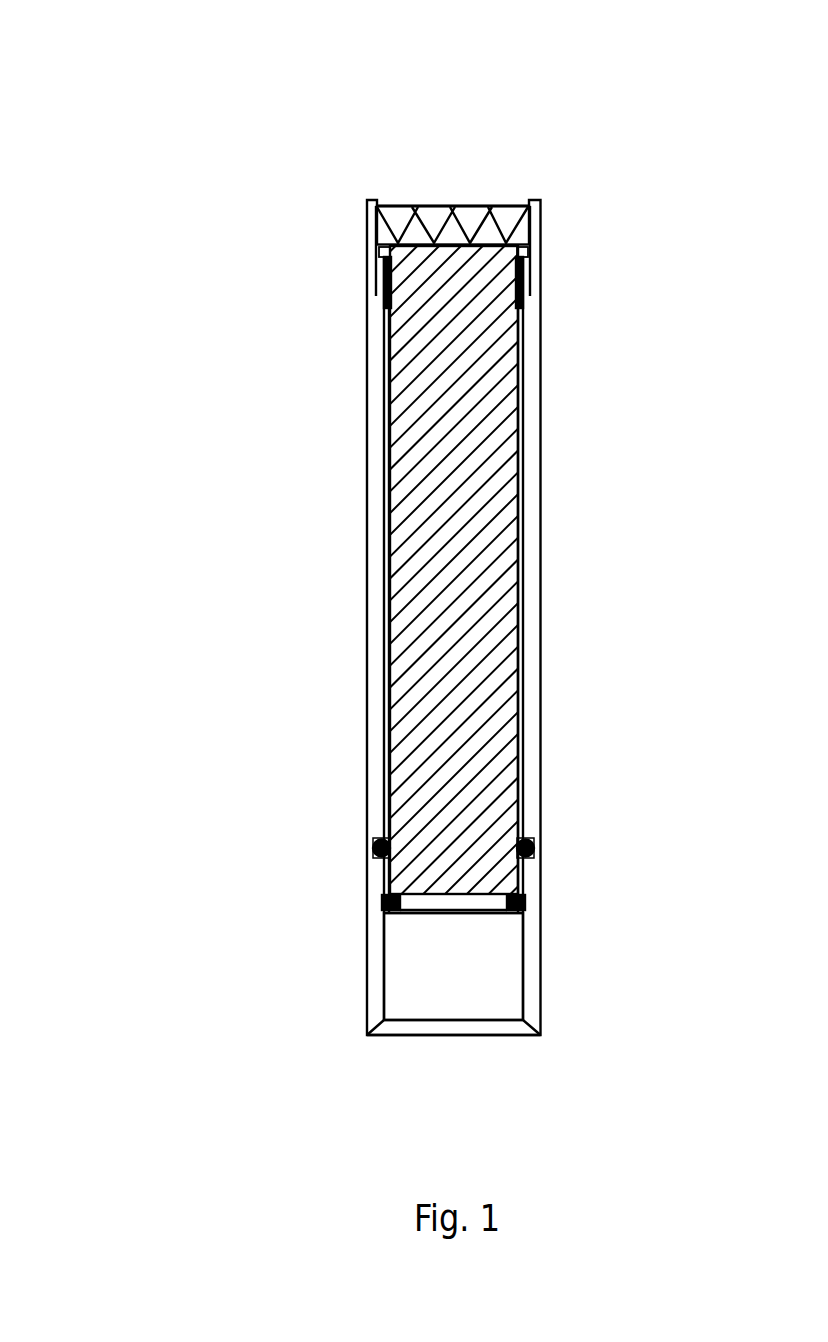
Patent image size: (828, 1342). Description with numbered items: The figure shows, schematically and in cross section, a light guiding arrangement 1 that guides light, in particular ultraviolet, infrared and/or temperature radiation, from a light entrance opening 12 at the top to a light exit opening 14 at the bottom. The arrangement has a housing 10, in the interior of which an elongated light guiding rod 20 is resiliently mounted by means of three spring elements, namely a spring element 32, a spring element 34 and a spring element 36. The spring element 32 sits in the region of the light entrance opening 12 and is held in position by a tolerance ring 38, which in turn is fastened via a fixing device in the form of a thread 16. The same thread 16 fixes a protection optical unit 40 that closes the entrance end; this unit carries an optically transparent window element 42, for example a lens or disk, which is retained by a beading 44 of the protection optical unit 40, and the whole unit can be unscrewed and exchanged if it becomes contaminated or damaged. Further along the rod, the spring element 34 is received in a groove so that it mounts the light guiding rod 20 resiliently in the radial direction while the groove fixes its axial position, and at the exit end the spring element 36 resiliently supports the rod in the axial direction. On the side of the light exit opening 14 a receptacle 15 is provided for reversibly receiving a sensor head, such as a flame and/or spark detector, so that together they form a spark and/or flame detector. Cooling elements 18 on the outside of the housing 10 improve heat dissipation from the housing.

The light guiding arrangement 1 is at (218, 498).
The housing 10 is at (528, 970).
The light entrance opening 12 is at (411, 127).
The light exit opening 14 is at (465, 1076).
The receptacle 15 is at (412, 977).
The thread 16 is at (376, 297).
The cooling element 18 is at (350, 420).
The light guiding rod 20 is at (475, 592).
The spring element 32 is at (531, 295).
The spring element 34 is at (533, 840).
The spring element 36 is at (518, 897).
The tolerance ring 38 is at (536, 258).
The protection optical unit 40 is at (503, 222).
The window element 42 is at (470, 213).
The beading 44 is at (534, 202).